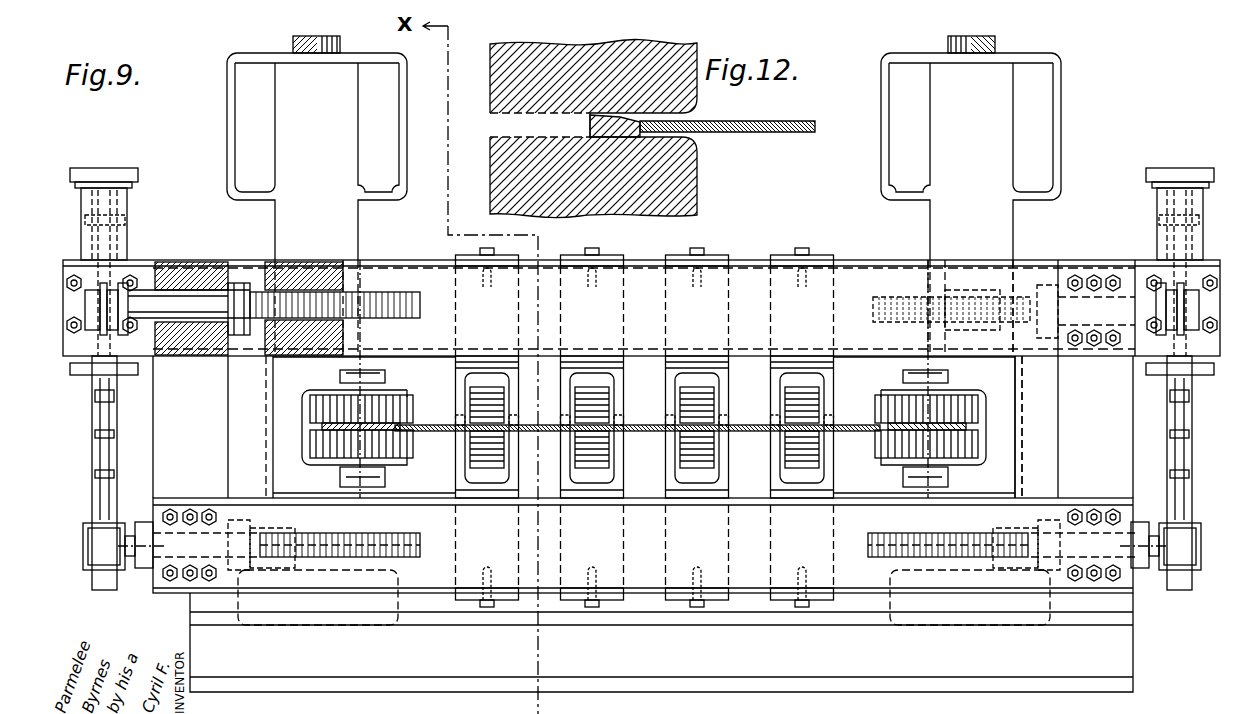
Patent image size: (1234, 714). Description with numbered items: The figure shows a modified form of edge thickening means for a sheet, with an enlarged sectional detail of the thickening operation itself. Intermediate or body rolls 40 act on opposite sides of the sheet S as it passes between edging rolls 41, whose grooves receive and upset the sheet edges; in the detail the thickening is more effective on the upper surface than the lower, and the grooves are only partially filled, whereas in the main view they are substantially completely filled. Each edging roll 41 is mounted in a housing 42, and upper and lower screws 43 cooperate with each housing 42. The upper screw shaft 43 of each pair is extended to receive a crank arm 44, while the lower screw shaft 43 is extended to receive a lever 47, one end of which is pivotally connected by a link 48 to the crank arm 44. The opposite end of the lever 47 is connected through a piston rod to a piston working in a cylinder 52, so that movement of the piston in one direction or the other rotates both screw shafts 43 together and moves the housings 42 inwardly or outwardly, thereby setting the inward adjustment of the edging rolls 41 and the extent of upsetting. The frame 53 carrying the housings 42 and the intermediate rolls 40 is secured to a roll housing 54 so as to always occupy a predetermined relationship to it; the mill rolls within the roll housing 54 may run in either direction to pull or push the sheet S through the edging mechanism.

In FIG. 9, the intermediate or body rolls 40 is at (477, 447).
In FIG. 9, the edging rolls 41 is at (402, 402).
In FIG. 12, the edging rolls 41 is at (572, 48).
In FIG. 9, the housing 42 is at (290, 426).
In FIG. 9, the upper and lower screws 43 is at (380, 299).
In FIG. 9, the crank arm 44 is at (147, 347).
In FIG. 9, the lever 47 is at (110, 588).
In FIG. 9, the link 48 is at (118, 452).
In FIG. 9, the cylinder 52 is at (117, 232).
In FIG. 9, the frame 53 is at (647, 252).
In FIG. 9, the roll housing 54 is at (288, 230).
In FIG. 9, the strip S is at (642, 427).
In FIG. 12, the strip S is at (738, 122).